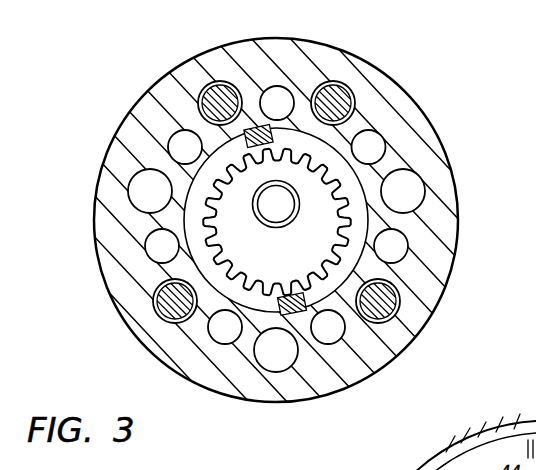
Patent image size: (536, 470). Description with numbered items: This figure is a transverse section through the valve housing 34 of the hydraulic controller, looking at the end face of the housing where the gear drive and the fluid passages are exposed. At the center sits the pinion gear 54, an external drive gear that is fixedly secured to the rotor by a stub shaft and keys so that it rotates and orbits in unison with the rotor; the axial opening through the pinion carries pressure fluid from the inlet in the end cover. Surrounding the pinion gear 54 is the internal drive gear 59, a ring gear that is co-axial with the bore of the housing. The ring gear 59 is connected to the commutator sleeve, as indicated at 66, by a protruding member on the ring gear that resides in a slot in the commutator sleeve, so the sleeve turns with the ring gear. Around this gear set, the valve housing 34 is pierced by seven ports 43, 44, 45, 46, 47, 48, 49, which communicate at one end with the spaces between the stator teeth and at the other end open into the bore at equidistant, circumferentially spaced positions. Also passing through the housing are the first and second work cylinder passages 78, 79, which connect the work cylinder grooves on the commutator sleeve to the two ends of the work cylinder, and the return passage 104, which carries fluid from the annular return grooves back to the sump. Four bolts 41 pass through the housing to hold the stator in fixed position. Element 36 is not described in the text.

The valve housing 34 is at (325, 56).
The internal drive gear 59 is at (366, 229).
The pinion gear 54 is at (282, 183).
The connection between ring gear and commutator sleeve 66 is at (268, 130).
The bolts 41 is at (352, 93).
The port 44 is at (272, 92).
The port 45 is at (370, 140).
The first work cylinder passage 78 is at (420, 191).
The port 46 is at (397, 248).
The port 47 is at (373, 379).
The return passage 104 is at (282, 373).
The port 48 is at (223, 338).
The port 49 is at (153, 248).
The second work cylinder passage 79 is at (137, 186).
The port 43 is at (178, 139).
The ring 36 is at (462, 440).